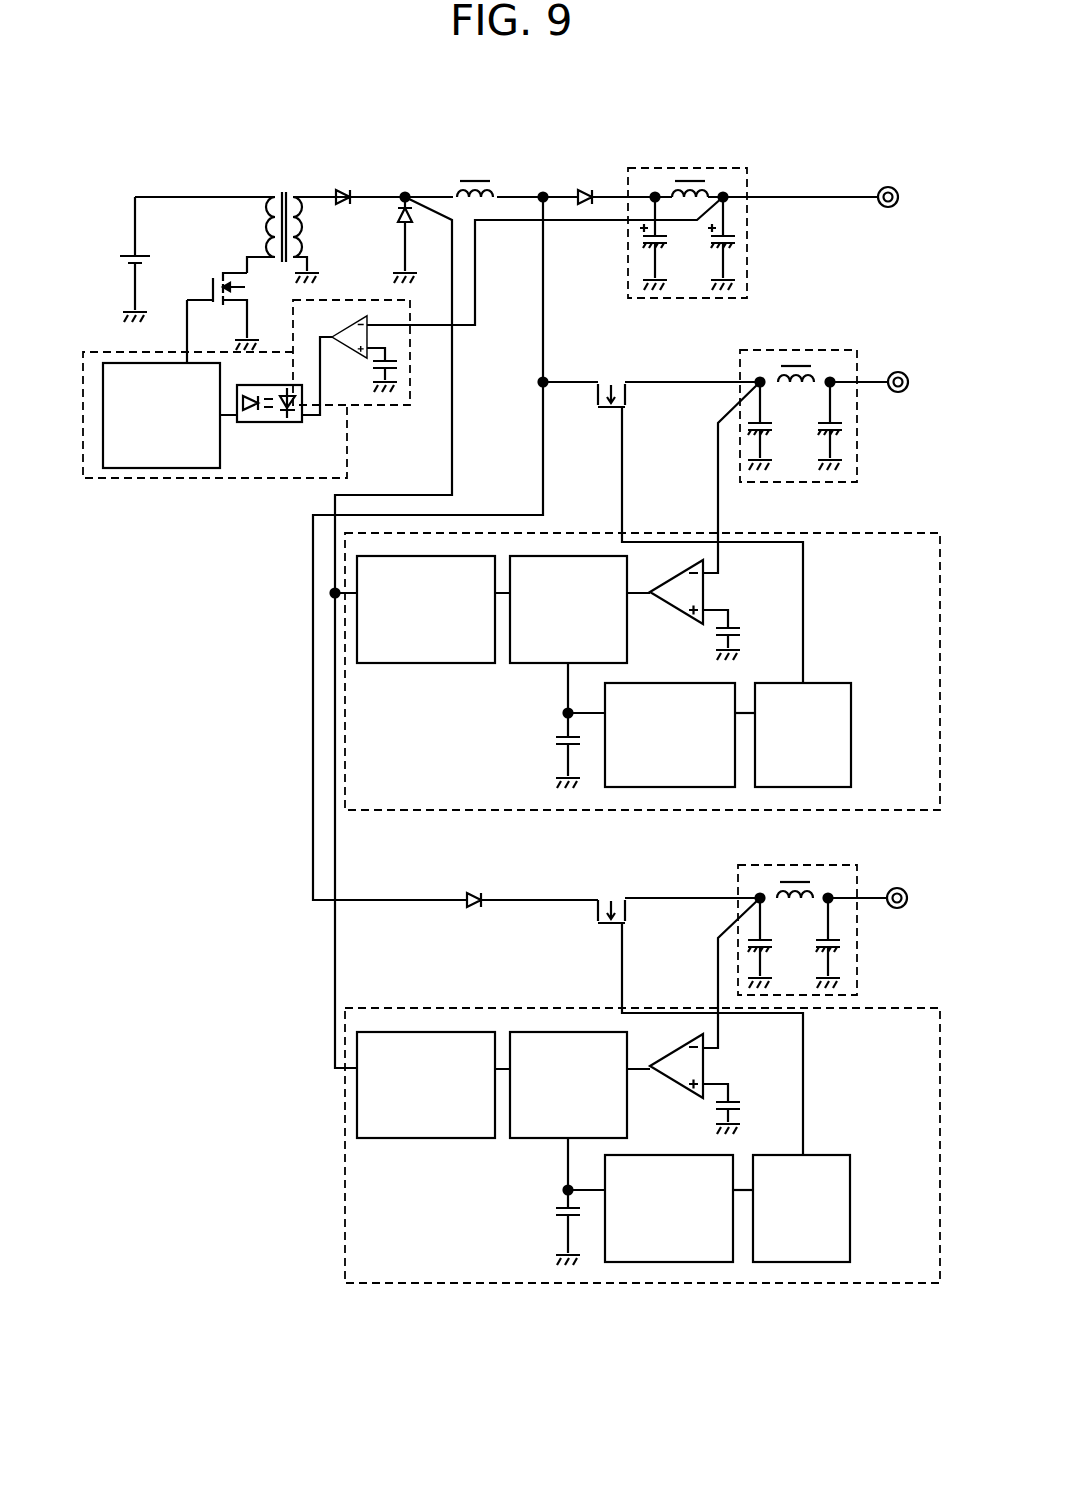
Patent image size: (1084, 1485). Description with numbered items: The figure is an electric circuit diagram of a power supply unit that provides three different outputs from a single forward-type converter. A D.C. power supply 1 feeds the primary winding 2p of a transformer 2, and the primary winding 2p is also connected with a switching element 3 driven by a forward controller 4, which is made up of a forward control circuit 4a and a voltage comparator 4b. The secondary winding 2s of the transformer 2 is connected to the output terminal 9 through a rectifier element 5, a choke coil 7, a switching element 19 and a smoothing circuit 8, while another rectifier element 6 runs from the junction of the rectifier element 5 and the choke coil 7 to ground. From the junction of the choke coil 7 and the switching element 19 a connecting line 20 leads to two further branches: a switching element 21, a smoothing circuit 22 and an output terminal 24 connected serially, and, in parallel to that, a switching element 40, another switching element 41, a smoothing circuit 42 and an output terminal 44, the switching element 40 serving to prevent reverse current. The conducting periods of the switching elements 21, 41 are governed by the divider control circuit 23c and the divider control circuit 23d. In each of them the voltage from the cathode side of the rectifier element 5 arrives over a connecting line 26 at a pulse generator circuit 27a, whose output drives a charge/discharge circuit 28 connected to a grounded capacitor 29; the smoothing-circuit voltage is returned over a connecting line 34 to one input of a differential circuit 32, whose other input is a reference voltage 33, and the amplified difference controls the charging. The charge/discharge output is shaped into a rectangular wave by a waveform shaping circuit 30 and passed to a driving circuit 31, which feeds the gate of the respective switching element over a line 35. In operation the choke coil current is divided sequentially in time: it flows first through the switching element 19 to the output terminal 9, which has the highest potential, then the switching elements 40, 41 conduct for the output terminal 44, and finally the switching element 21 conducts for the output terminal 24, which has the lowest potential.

The D.C. power supply 1 is at (124, 238).
The transformer 2 is at (277, 201).
The primary winding 2p is at (263, 203).
The secondary winding 2s is at (297, 200).
The switching element 3 is at (217, 273).
The forward controller 4 is at (246, 425).
The forward control circuit 4a is at (207, 468).
The voltage comparator 4b is at (345, 343).
The rectifier element 5 is at (343, 188).
The rectifier element 6 is at (393, 217).
The choke coil 7 is at (475, 172).
The smoothing circuit 8 is at (693, 168).
The output terminal 9 is at (885, 188).
The switching element 19 is at (585, 180).
The connecting line 20 is at (545, 245).
The switching element 21 is at (606, 376).
The smoothing circuit 22 is at (783, 348).
The divider control circuit 23c is at (455, 810).
The divider control circuit 23d is at (343, 1230).
The output terminal 24 is at (895, 368).
The connecting line 26 is at (453, 362).
The pulse generator circuit 27a is at (375, 663).
The charge/discharge circuit 28 is at (530, 663).
The capacitor 29 is at (553, 740).
The waveform shaping circuit 30 is at (651, 788).
The driving circuit 31 is at (773, 787).
The differential circuit 32 is at (705, 588).
The reference voltage 33 is at (745, 630).
The connecting line 34 is at (716, 478).
The drive line 35 is at (620, 470).
The switching element 40 is at (467, 905).
The switching element 41 is at (604, 893).
The smoothing circuit 42 is at (855, 958).
The output terminal 44 is at (898, 880).